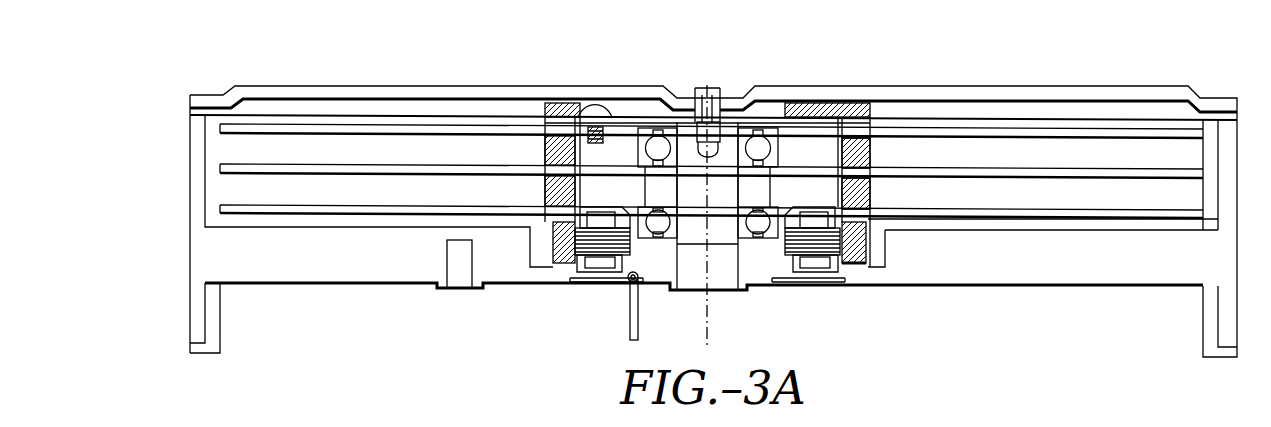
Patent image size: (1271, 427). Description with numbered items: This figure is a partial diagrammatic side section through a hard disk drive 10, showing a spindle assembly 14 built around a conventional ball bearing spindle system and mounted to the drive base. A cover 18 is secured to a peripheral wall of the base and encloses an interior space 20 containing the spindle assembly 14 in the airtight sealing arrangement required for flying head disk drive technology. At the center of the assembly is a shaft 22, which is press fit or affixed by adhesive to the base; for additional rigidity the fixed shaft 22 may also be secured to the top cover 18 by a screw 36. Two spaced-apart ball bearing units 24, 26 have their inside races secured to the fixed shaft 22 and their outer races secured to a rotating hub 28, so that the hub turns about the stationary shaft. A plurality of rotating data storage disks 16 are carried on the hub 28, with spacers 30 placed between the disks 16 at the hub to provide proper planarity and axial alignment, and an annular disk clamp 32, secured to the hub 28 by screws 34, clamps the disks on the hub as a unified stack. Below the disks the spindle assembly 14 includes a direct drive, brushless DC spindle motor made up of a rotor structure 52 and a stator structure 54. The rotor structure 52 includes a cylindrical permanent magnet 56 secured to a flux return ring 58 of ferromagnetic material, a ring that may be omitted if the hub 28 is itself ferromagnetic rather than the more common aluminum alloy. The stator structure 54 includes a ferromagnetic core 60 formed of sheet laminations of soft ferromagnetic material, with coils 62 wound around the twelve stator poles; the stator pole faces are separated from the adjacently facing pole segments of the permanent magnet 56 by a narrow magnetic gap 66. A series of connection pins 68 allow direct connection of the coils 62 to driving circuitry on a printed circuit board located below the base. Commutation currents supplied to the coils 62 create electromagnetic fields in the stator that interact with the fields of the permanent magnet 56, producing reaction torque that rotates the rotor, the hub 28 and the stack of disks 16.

The hard disk drive 10 is at (680, 67).
The spindle assembly 14 is at (645, 82).
The data storage disks 16 is at (378, 206).
The cover 18 is at (426, 86).
The interior space 20 is at (418, 190).
The shaft 22 is at (712, 262).
The ball bearing unit 24 is at (772, 208).
The ball bearing unit 26 is at (773, 138).
The hub 28 is at (815, 140).
The spacers 30 is at (870, 193).
The disk clamp 32 is at (556, 103).
The screws 34 is at (592, 110).
The screw 36 is at (698, 100).
The rotor structure 52 is at (545, 278).
The stator structure 54 is at (603, 283).
The permanent magnet 56 is at (851, 268).
The flux return ring 58 is at (862, 268).
The ferromagnetic core 60 is at (786, 253).
The coils 62 is at (815, 265).
The magnetic gap 66 is at (575, 280).
The connection pins 68 is at (640, 323).